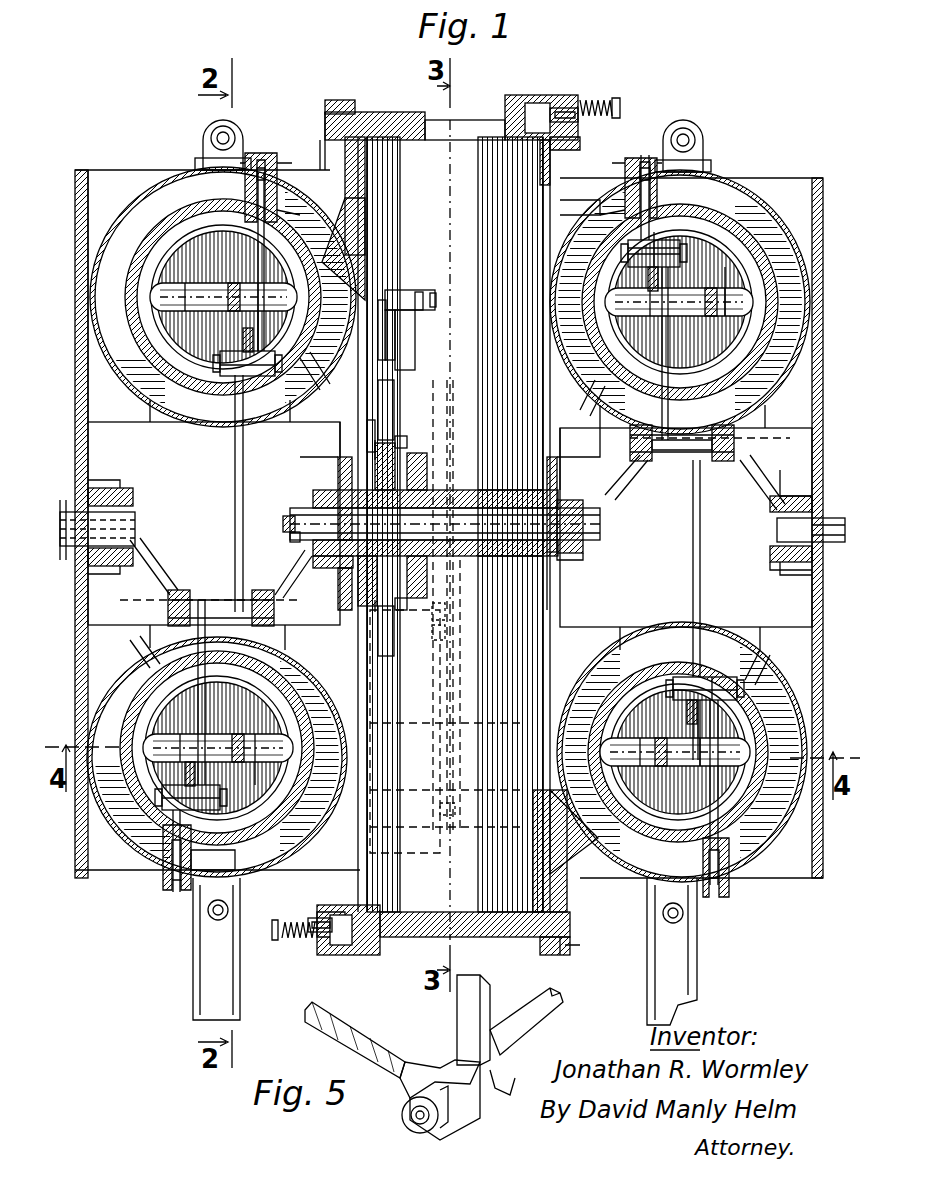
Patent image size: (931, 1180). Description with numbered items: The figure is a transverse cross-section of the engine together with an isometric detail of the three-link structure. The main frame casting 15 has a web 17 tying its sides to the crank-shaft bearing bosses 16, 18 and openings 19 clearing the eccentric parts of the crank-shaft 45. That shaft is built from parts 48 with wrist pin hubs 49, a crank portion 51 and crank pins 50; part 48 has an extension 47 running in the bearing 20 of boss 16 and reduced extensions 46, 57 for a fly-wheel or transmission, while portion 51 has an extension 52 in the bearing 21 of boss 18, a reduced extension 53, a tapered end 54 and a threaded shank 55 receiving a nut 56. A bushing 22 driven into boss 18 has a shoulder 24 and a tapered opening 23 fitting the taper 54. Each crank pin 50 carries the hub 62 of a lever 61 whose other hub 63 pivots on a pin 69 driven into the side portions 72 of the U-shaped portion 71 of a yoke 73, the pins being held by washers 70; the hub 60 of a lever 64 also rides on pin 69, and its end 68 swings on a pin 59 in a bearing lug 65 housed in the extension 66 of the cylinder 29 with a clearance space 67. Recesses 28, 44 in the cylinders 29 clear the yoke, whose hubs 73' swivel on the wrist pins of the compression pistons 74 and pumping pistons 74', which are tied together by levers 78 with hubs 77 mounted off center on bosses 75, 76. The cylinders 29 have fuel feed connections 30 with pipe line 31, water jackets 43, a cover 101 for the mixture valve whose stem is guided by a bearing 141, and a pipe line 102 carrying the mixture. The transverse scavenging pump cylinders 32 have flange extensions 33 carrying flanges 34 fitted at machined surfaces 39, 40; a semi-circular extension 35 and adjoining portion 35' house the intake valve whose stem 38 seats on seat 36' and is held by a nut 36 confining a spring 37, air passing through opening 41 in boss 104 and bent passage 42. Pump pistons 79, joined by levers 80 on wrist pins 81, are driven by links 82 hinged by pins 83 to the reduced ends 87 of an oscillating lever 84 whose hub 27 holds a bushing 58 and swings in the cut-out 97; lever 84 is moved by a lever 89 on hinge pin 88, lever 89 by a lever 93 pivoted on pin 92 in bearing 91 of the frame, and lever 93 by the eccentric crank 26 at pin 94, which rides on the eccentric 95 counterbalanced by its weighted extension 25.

In FIG. 1, the main frame casting 15 is at (80, 176).
In FIG. 1, the crank-shaft bearing boss 16 is at (118, 482).
In FIG. 1, the web 17 is at (778, 178).
In FIG. 1, the central crank-shaft bearing boss 18 is at (320, 480).
In FIG. 1, the opening 19 is at (183, 510).
In FIG. 1, the bearing 20 is at (135, 518).
In FIG. 1, the bearing 21 is at (310, 510).
In FIG. 1, the bushing 22 is at (338, 590).
In FIG. 1, the tapered opening 23 is at (313, 562).
In FIG. 1, the shoulder 24 is at (380, 540).
In FIG. 1, the weighted extension 25 is at (378, 614).
In FIG. 1, the eccentric lever 26 is at (394, 400).
In FIG. 1, the hub extension 27 is at (440, 495).
In FIG. 1, the recess 28 is at (305, 400).
In FIG. 1, the cylinder 29 is at (135, 185).
In FIG. 1, the fuel feed connecting means 30 is at (236, 124).
In FIG. 1, the pipe line 31 is at (216, 132).
In FIG. 1, the pump cylinder 32 is at (470, 150).
In FIG. 1, the flange extension 33 is at (315, 912).
In FIG. 1, the flange 34 is at (410, 118).
In FIG. 1, the semi-circular extension 35 is at (447, 527).
In FIG. 1, the valve chamber 35' is at (445, 507).
In FIG. 1, the threaded nut 36 is at (429, 487).
In FIG. 1, the valve seat 36' is at (443, 541).
In FIG. 1, the spring 37 is at (606, 108).
In FIG. 1, the intake valve stem 38 is at (612, 100).
In FIG. 1, the machined surface 39 is at (340, 148).
In FIG. 1, the machined surface 40 is at (340, 102).
In FIG. 1, the port 41 is at (370, 112).
In FIG. 1, the bent passage 42 is at (368, 232).
In FIG. 1, the water cooling jacket 43 is at (178, 190).
In FIG. 1, the recess 44 is at (290, 408).
In FIG. 1, the crank-shaft 45 is at (140, 575).
In FIG. 1, the reduced extension 46 is at (830, 545).
In FIG. 1, the extension 47 is at (770, 566).
In FIG. 1, the crank-shaft part 48 is at (130, 500).
In FIG. 1, the wrist pin hub 49 is at (720, 462).
In FIG. 1, the crank pin 50 is at (168, 606).
In FIG. 1, the crank portion 51 is at (280, 585).
In FIG. 1, the extension 52 is at (584, 560).
In FIG. 1, the reduced extension 53 is at (445, 524).
In FIG. 1, the tapered end 54 is at (340, 480).
In FIG. 1, the threaded shank 55 is at (283, 528).
In FIG. 1, the nut 56 is at (290, 540).
In FIG. 1, the reduced extension 57 is at (70, 505).
In FIG. 1, the bushing 58 is at (490, 558).
In FIG. 1, the pin 59 is at (666, 195).
In FIG. 1, the hub 60 is at (650, 268).
In FIG. 1, the lever 61 is at (244, 470).
In FIG. 5, the lever 61 is at (365, 1042).
In FIG. 1, the hub 62 is at (206, 592).
In FIG. 1, the hub 63 is at (658, 240).
In FIG. 1, the lever 64 is at (262, 272).
In FIG. 5, the lever 64 is at (555, 1020).
In FIG. 1, the bearing lug 65 is at (258, 153).
In FIG. 1, the recessed extension 66 is at (268, 158).
In FIG. 1, the clearance space 67 is at (278, 165).
In FIG. 1, the lever end 68 is at (600, 200).
In FIG. 1, the pin 69 is at (213, 364).
In FIG. 5, the pin 69 is at (410, 1118).
In FIG. 1, the washer 70 is at (276, 362).
In FIG. 5, the washer 70 is at (405, 1104).
In FIG. 1, the U-shaped portion 71 is at (260, 340).
In FIG. 5, the U-shaped portion 71 is at (445, 1062).
In FIG. 1, the side portion 72 is at (228, 378).
In FIG. 5, the side portion 72 is at (446, 1125).
In FIG. 1, the yoke 73 is at (441, 523).
In FIG. 5, the yoke 73 is at (493, 1011).
In FIG. 1, the yoke hub 73' is at (697, 751).
In FIG. 1, the compression piston 74 is at (456, 747).
In FIG. 1, the pumping piston 74' is at (459, 299).
In FIG. 1, the boss portion 75 is at (160, 300).
In FIG. 1, the boss portion 76 is at (298, 297).
In FIG. 1, the hub 77 is at (185, 312).
In FIG. 1, the lever 78 is at (228, 290).
In FIG. 1, the pump piston 79 is at (480, 350).
In FIG. 1, the lever 80 is at (452, 672).
In FIG. 1, the wrist pin 81 is at (456, 808).
In FIG. 1, the auxiliary link 82 is at (432, 660).
In FIG. 1, the hinge pin 83 is at (446, 612).
In FIG. 1, the oscillating lever 84 is at (428, 585).
In FIG. 1, the reduced end extension 87 is at (446, 632).
In FIG. 1, the hinge pin 88 is at (436, 300).
In FIG. 1, the lever 89 is at (416, 332).
In FIG. 1, the bearing 91 is at (400, 362).
In FIG. 1, the pin 92 is at (437, 298).
In FIG. 1, the lever 93 is at (419, 292).
In FIG. 1, the pin 94 is at (382, 300).
In FIG. 1, the eccentric 95 is at (371, 420).
In FIG. 1, the cut out portion 97 is at (420, 632).
In FIG. 1, the cover 101 is at (240, 960).
In FIG. 1, the pipe line 102 is at (228, 910).
In FIG. 1, the boss 104 is at (322, 112).
In FIG. 1, the bearing 141 is at (405, 585).